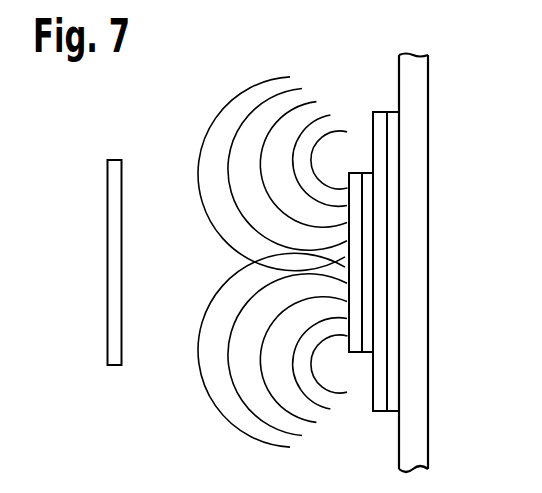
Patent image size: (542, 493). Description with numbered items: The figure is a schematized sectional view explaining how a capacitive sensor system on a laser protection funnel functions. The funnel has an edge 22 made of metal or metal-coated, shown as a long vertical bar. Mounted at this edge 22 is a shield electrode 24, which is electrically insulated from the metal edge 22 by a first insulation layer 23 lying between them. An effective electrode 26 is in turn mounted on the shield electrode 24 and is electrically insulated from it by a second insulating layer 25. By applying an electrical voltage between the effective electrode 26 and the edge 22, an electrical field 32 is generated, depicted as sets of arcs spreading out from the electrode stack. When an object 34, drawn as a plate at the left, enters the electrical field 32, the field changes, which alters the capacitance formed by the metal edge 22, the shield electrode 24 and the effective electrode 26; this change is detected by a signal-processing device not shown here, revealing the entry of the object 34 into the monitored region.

The edge 22 is at (416, 78).
The first insulation layer 23 is at (393, 190).
The shield electrode 24 is at (380, 145).
The second insulating layer 25 is at (368, 293).
The effective electrode 26 is at (357, 243).
The electrical field 32 is at (223, 148).
The object 34 is at (113, 261).